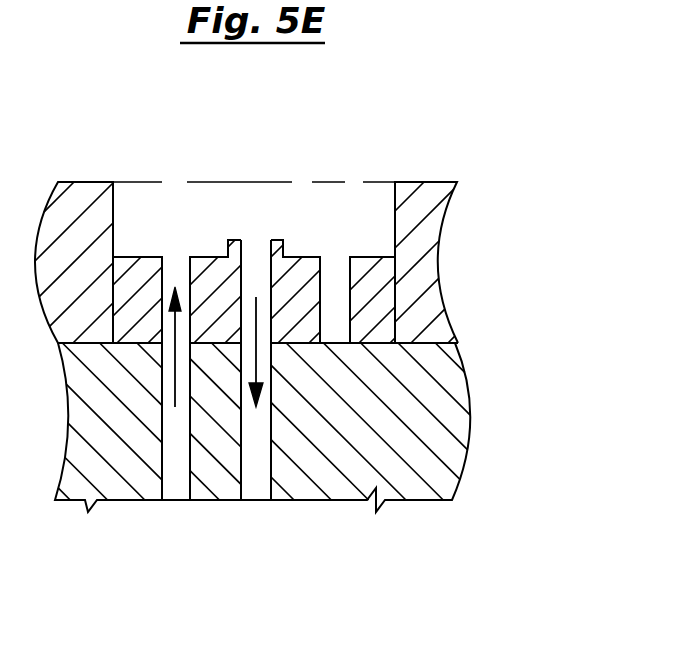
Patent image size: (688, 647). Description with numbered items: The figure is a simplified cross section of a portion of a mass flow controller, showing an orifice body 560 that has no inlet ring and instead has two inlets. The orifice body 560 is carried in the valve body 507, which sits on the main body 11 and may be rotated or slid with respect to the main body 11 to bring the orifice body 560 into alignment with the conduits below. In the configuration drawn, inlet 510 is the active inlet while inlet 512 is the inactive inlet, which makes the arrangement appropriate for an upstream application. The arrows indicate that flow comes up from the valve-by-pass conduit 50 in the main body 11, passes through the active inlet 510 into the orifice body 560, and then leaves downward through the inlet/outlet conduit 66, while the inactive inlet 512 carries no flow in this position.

The valve body 507 is at (420, 262).
The orifice body 560 is at (302, 256).
The inactive inlet 512 is at (335, 258).
The active inlet 510 is at (175, 258).
The valve-by-pass conduit 50 is at (177, 452).
The inlet/outlet conduit 66 is at (258, 452).
The main body 11 is at (385, 428).